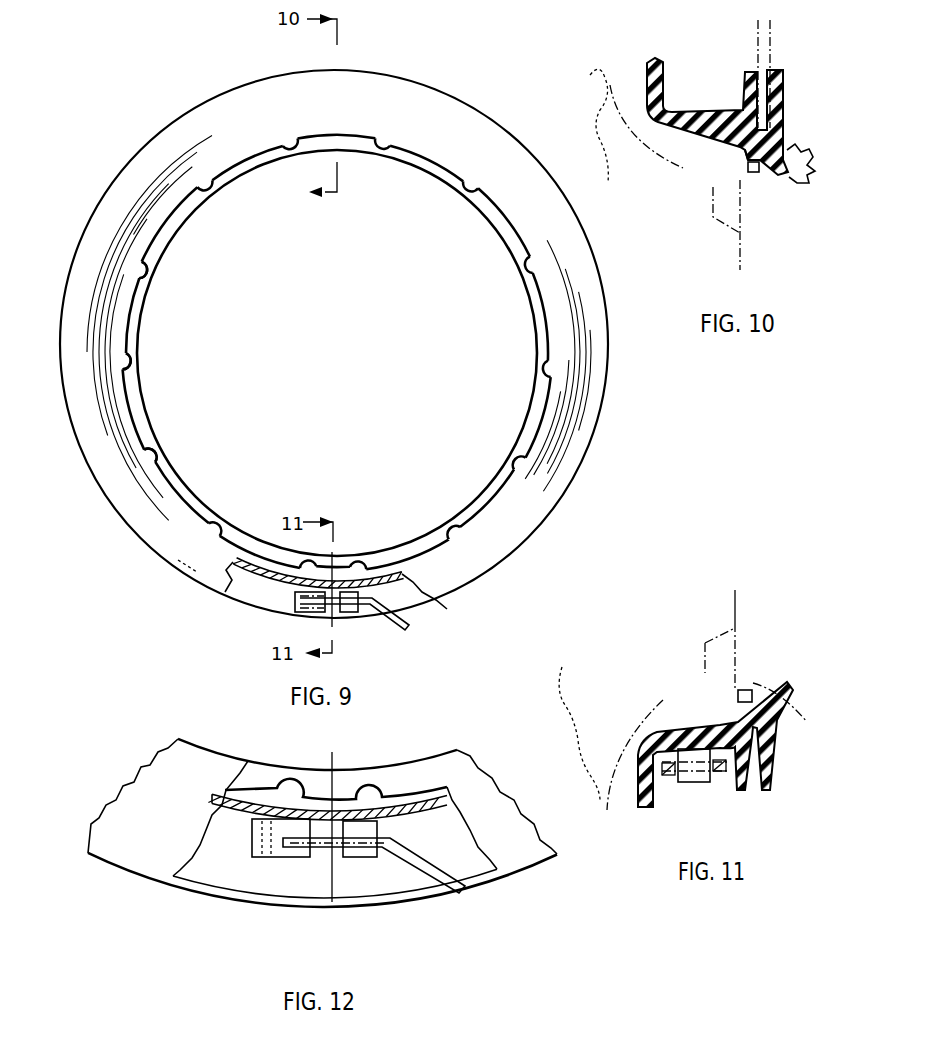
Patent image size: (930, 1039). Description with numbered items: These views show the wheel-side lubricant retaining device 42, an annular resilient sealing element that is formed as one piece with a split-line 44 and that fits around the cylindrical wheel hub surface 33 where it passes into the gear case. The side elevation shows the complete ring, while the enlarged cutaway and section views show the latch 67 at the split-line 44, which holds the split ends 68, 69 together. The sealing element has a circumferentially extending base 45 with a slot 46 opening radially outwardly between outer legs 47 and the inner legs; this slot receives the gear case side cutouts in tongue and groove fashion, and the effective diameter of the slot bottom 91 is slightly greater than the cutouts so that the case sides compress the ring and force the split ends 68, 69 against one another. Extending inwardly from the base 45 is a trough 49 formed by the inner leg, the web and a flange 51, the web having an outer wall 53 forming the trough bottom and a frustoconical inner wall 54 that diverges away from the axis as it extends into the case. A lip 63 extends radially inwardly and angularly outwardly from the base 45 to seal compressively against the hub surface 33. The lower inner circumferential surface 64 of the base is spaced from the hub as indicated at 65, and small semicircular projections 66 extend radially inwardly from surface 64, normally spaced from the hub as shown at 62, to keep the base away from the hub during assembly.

In FIG. 9, the wheel-side lubricant retaining device 42 is at (116, 168).
In FIG. 10, the wheel-side lubricant retaining device 42 is at (641, 48).
In FIG. 11, the wheel-side lubricant retaining device 42 is at (655, 803).
In FIG. 9, the projections 66 is at (124, 357).
In FIG. 10, the projections 66 is at (748, 167).
In FIG. 11, the projections 66 is at (738, 697).
In FIG. 9, the spacing of projections from hub surface 62 is at (158, 448).
In FIG. 11, the spacing of projections from hub surface 62 is at (727, 686).
In FIG. 9, the latch 67 is at (405, 632).
In FIG. 10, the flange 51 is at (647, 86).
In FIG. 10, the trough 49 is at (703, 106).
In FIG. 10, the outer wall 53 is at (715, 114).
In FIG. 10, the slot 46 is at (775, 70).
In FIG. 10, the outer legs 47 is at (781, 112).
In FIG. 10, the inner wall 54 is at (687, 136).
In FIG. 10, the base 45 is at (746, 153).
In FIG. 11, the base 45 is at (736, 723).
In FIG. 10, the lip 63 is at (793, 172).
In FIG. 11, the lip 63 is at (795, 702).
In FIG. 10, the lower inner circumferential surface 64 is at (771, 167).
In FIG. 11, the lower inner circumferential surface 64 is at (764, 712).
In FIG. 10, the wheel hub surface 33 is at (768, 178).
In FIG. 11, the wheel hub surface 33 is at (744, 690).
In FIG. 10, the spacing between base surface and hub 65 is at (766, 178).
In FIG. 11, the bottom of slot 91 is at (771, 757).
In FIG. 12, the split-line 44 is at (335, 797).
In FIG. 12, the split end 68 is at (325, 885).
In FIG. 12, the split end 69 is at (335, 872).